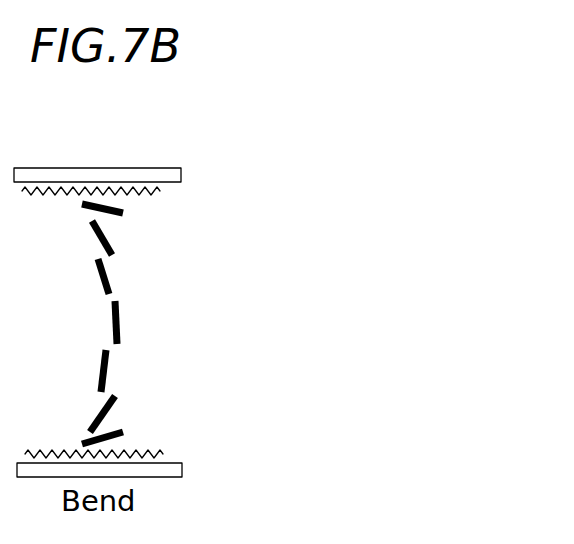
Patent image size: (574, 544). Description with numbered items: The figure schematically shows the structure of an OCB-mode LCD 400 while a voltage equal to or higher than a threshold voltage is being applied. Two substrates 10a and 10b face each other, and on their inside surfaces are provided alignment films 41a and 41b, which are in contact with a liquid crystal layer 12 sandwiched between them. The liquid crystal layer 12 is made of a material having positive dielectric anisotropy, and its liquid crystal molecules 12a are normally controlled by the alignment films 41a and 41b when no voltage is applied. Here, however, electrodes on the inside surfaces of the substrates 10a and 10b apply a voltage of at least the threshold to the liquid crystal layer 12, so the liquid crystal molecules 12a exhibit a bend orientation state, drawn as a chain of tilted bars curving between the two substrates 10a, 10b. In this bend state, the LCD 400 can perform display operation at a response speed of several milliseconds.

The OCB-mode LCD 400 is at (272, 143).
The substrate 10a is at (181, 172).
The alignment film 41a is at (158, 196).
The liquid crystal layer 12 is at (175, 324).
The liquid crystal molecules 12a is at (127, 322).
The alignment film 41b is at (160, 448).
The substrate 10b is at (183, 470).